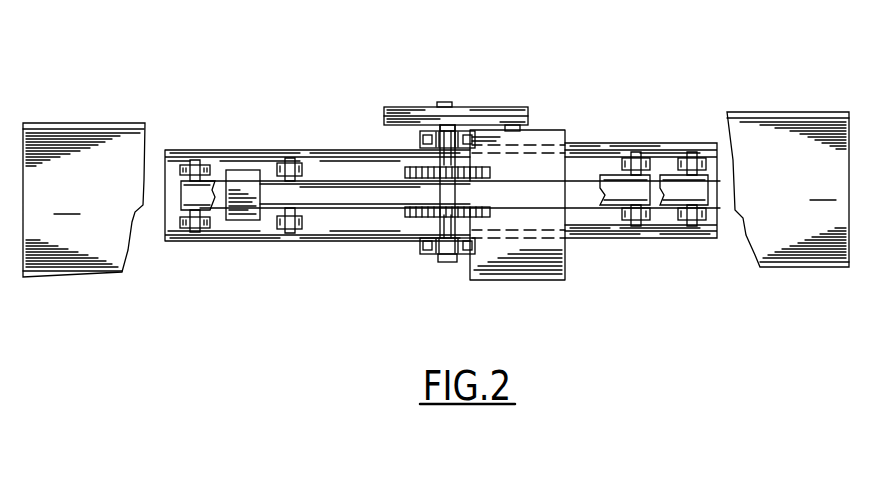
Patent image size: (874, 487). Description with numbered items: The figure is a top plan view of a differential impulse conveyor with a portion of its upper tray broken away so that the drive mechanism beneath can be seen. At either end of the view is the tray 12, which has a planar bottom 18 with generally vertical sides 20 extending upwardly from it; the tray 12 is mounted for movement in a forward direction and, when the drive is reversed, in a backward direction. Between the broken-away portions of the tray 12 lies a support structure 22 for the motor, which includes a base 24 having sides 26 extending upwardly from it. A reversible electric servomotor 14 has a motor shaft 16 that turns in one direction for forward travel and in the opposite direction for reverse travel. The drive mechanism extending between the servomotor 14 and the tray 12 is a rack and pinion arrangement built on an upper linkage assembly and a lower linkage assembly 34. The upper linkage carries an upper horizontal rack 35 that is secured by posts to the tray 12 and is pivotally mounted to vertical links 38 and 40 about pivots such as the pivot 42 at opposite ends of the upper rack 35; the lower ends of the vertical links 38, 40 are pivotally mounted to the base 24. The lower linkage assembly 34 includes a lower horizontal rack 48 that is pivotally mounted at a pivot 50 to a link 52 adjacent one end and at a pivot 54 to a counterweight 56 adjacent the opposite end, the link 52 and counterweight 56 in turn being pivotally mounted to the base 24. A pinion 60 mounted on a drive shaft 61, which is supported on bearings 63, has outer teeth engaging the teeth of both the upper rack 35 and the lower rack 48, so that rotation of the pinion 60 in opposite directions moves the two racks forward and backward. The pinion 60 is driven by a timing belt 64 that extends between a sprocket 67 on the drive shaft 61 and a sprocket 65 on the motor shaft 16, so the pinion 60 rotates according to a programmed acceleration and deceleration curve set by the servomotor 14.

The tray 12 is at (800, 100).
The reversible electric servomotor 14 is at (517, 283).
The motor shaft 16 is at (503, 133).
The planar bottom 18 is at (436, 194).
The vertical sides 20 is at (55, 123).
The support structure 22 is at (582, 140).
The base 24 is at (578, 236).
The sides 26 is at (668, 150).
The lower linkage assembly 34 is at (600, 238).
The upper horizontal rack 35 is at (195, 195).
The vertical link 38 is at (190, 162).
The vertical link 40 is at (697, 160).
The pivot 42 is at (200, 207).
The lower horizontal rack 48 is at (612, 180).
The pivot 50 is at (642, 170).
The link 52 is at (655, 230).
The pivot 54 is at (288, 228).
The counterweight 56 is at (250, 178).
The pinion 60 is at (367, 205).
The drive shaft 61 is at (450, 262).
The bearings 63 is at (425, 138).
The timing belt 64 is at (480, 118).
The sprocket 65 is at (510, 107).
The sprocket 67 is at (447, 104).